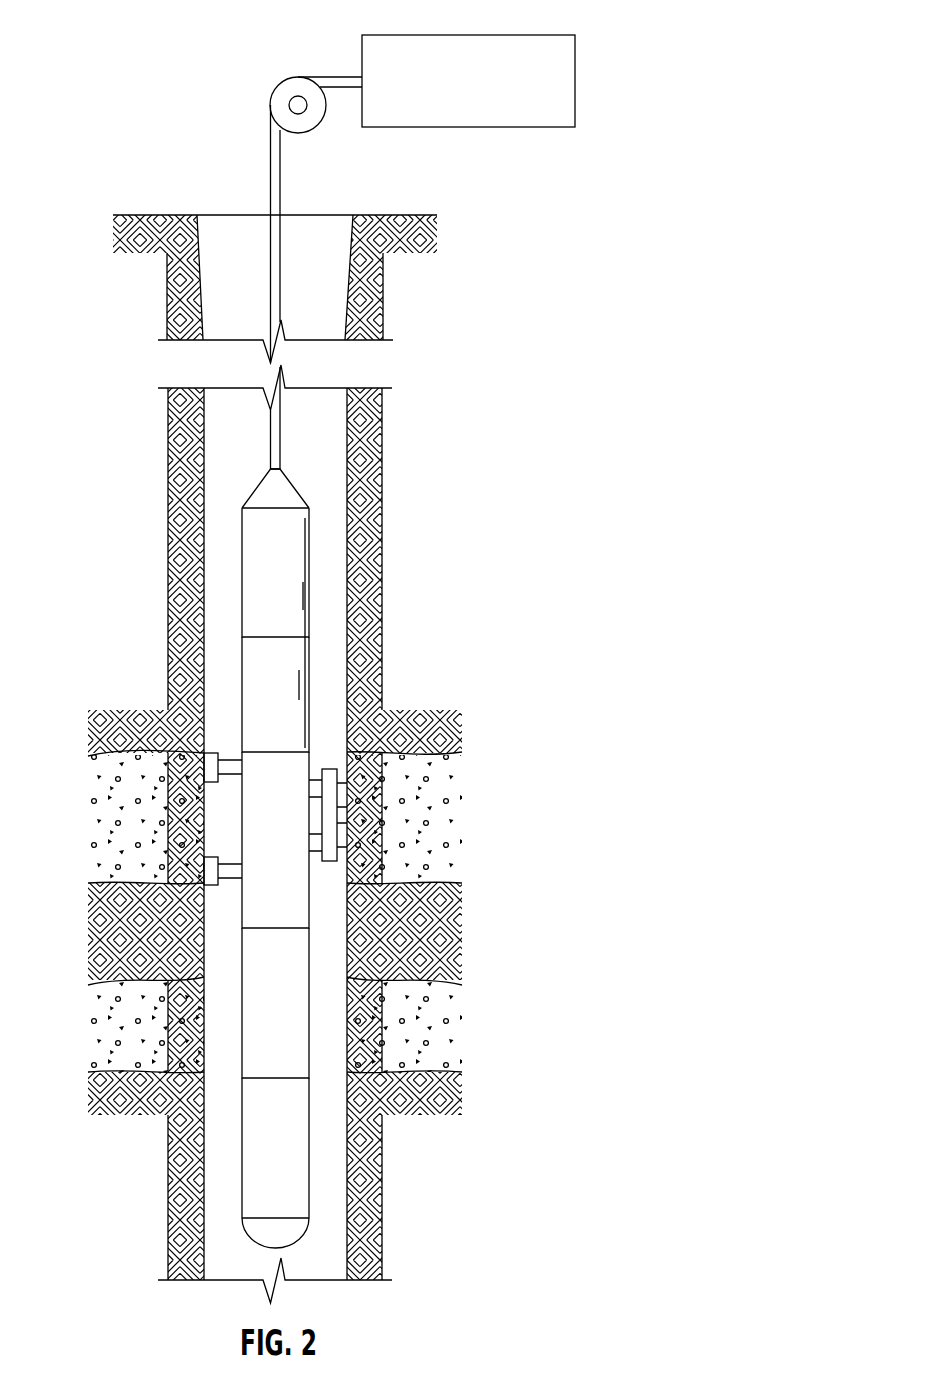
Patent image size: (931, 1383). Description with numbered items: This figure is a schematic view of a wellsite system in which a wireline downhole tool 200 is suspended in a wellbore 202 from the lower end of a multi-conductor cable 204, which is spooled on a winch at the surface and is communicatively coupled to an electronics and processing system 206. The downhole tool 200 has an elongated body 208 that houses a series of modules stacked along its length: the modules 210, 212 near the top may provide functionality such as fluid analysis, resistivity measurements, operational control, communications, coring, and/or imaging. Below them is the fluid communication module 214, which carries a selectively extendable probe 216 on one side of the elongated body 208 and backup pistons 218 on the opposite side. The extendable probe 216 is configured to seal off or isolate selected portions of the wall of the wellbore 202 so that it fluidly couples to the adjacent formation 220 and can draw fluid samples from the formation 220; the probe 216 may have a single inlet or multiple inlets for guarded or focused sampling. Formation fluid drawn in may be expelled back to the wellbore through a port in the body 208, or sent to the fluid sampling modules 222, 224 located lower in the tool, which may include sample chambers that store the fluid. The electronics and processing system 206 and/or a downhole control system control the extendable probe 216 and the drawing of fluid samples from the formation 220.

The wireline downhole tool 200 is at (287, 858).
The wellbore 202 is at (352, 455).
The multi-conductor cable 204 is at (268, 225).
The electronics and processing system 206 is at (508, 34).
The elongated body 208 is at (240, 548).
The module 210 is at (270, 693).
The module 212 is at (270, 607).
The fluid communication module 214 is at (280, 865).
The extendable probe 216 is at (348, 818).
The backup pistons 218 is at (210, 875).
The formation 220 is at (462, 829).
The fluid sampling module 222 is at (262, 965).
The fluid sampling module 224 is at (280, 1118).